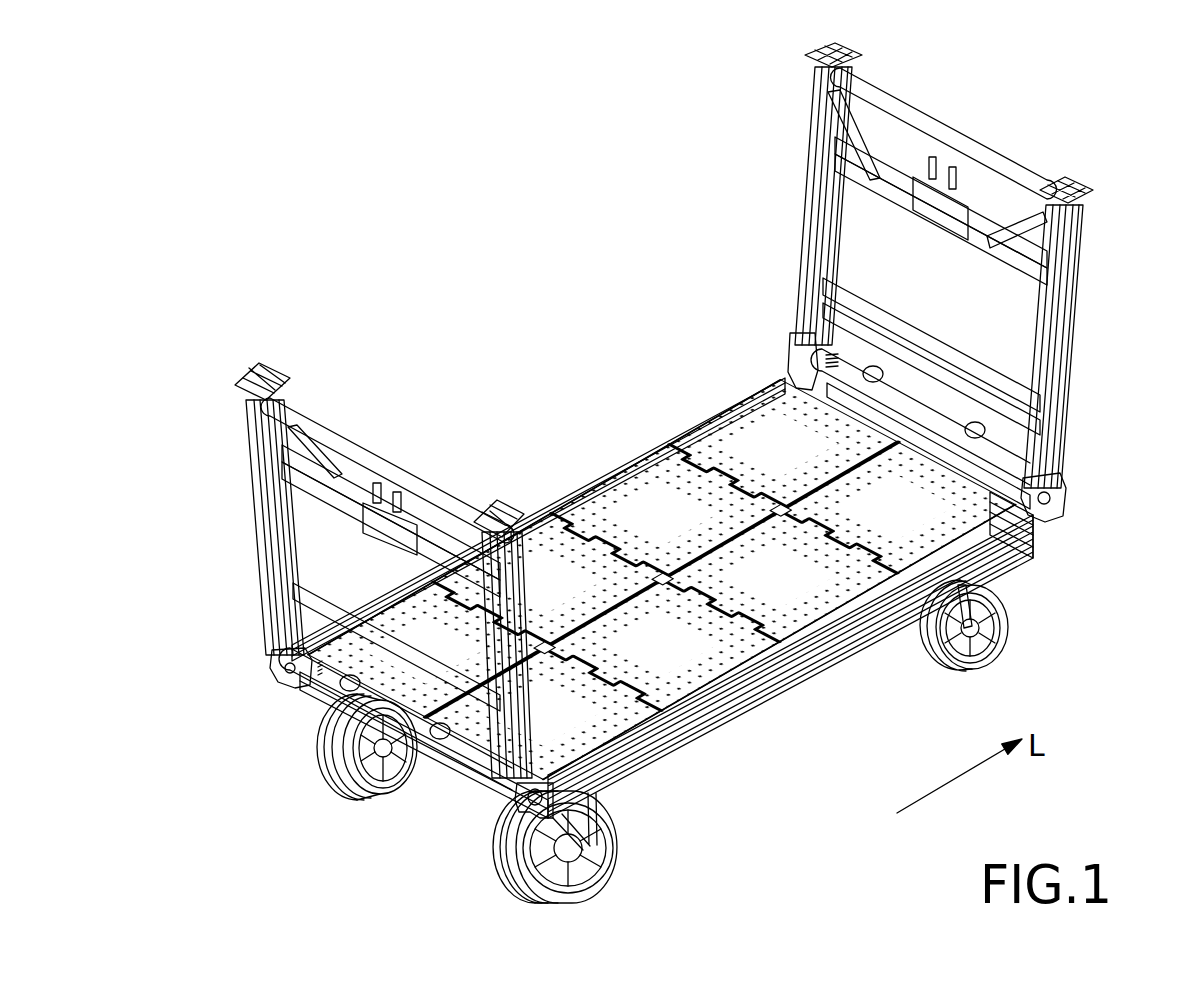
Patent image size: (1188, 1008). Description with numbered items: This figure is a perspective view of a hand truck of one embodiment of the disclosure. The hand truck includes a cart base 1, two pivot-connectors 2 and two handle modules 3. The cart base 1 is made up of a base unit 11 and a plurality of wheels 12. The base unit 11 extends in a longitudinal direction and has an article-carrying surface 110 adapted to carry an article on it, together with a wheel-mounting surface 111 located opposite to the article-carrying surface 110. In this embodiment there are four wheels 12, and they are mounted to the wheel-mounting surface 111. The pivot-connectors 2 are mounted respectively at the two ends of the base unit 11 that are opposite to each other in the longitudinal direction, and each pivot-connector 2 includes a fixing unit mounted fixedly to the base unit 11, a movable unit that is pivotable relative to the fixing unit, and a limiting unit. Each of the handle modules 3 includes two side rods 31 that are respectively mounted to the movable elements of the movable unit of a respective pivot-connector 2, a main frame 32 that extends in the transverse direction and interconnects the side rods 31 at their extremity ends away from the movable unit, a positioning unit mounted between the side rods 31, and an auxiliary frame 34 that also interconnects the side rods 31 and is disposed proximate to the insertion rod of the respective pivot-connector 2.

The cart base 1 is at (661, 621).
The base unit 11 is at (700, 670).
The article-carrying surface 110 is at (645, 503).
The wheel-mounting surface 111 is at (820, 583).
The wheels 12 is at (983, 650).
The pivot-connectors 2 is at (1092, 512).
The handle modules 3 is at (654, 417).
The side rods 31 is at (812, 203).
The main frame 32 is at (948, 135).
The auxiliary frame 34 is at (1010, 380).